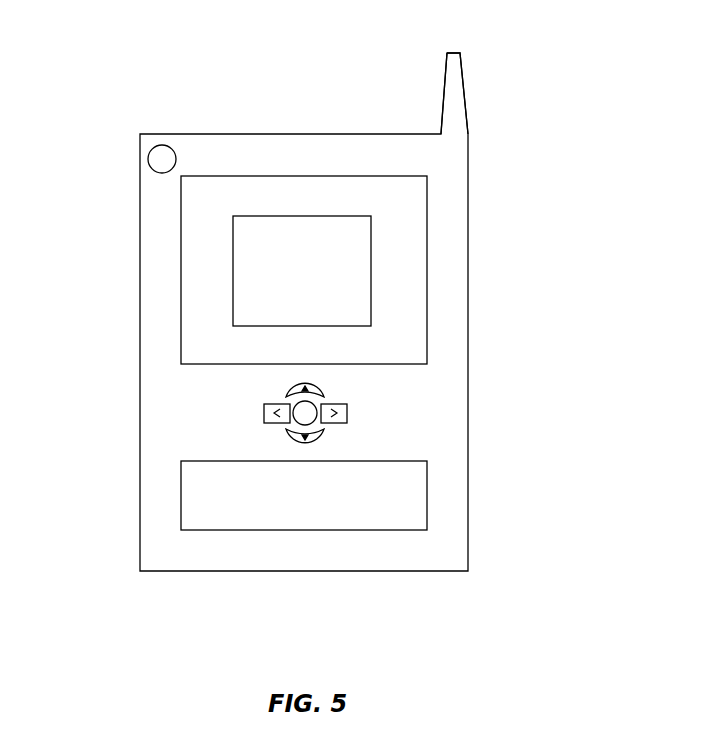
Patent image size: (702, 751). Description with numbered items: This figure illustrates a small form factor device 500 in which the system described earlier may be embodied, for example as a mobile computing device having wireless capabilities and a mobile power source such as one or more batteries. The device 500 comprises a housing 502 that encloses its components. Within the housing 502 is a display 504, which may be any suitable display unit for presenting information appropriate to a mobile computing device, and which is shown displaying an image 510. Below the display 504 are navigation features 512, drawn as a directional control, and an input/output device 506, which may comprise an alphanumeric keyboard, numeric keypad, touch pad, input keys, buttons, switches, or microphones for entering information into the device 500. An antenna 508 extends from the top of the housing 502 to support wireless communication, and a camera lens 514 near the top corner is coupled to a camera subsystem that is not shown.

The small form factor device 500 is at (154, 68).
The housing 502 is at (468, 352).
The display 504 is at (427, 188).
The input/output (I/O) device 506 is at (427, 489).
The antenna 508 is at (443, 89).
The image 510 is at (371, 288).
The navigation features 512 is at (355, 407).
The camera lens 514 is at (148, 159).